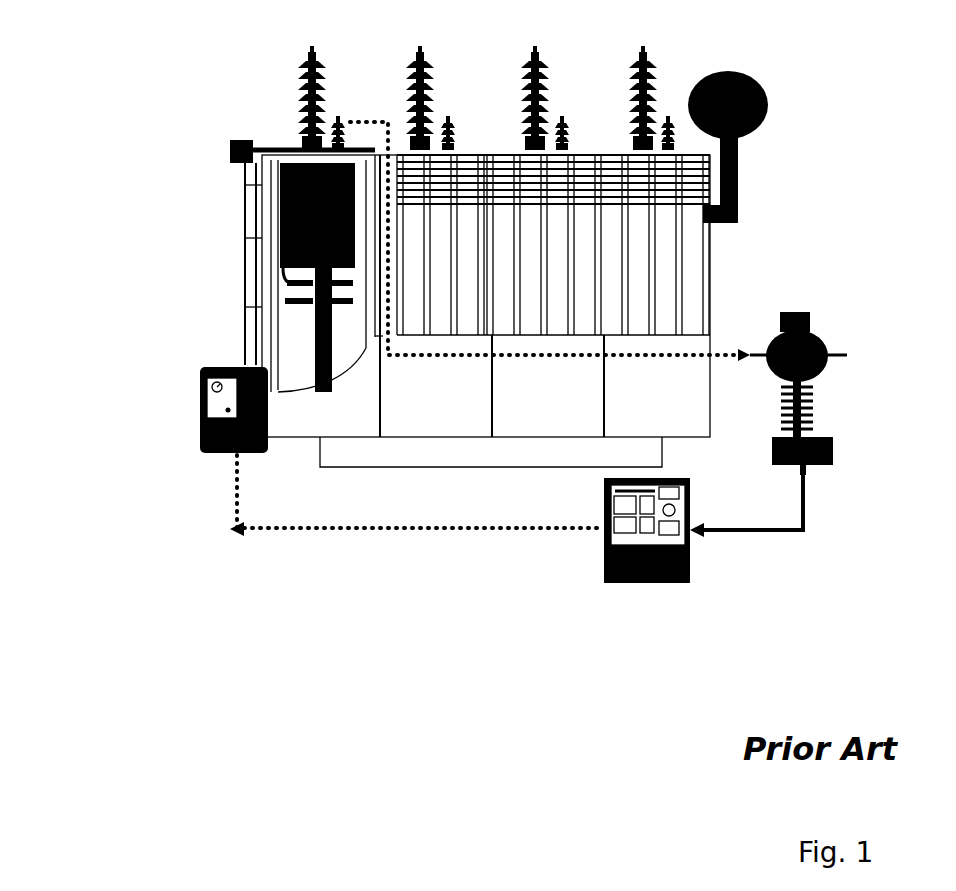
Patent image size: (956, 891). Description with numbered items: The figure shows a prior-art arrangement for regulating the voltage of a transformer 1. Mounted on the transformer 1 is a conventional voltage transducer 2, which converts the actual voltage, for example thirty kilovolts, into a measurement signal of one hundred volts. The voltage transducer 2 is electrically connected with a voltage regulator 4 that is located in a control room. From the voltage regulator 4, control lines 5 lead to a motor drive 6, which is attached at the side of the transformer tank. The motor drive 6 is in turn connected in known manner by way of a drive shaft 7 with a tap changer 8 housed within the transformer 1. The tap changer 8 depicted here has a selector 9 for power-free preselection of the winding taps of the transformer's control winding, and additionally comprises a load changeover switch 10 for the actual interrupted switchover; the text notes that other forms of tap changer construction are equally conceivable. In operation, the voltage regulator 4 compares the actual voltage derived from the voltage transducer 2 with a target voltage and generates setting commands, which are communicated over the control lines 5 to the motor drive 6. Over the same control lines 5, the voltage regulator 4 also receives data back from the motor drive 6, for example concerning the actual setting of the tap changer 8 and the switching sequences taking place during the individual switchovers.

The transformer 1 is at (585, 233).
The voltage transducer 2 is at (392, 110).
The voltage regulator 4 is at (695, 565).
The control lines 5 is at (495, 538).
The motor drive 6 is at (220, 458).
The drive shaft 7 is at (250, 323).
The tap changer 8 is at (243, 185).
The selector 9 is at (243, 307).
The load changeover switch 10 is at (243, 238).